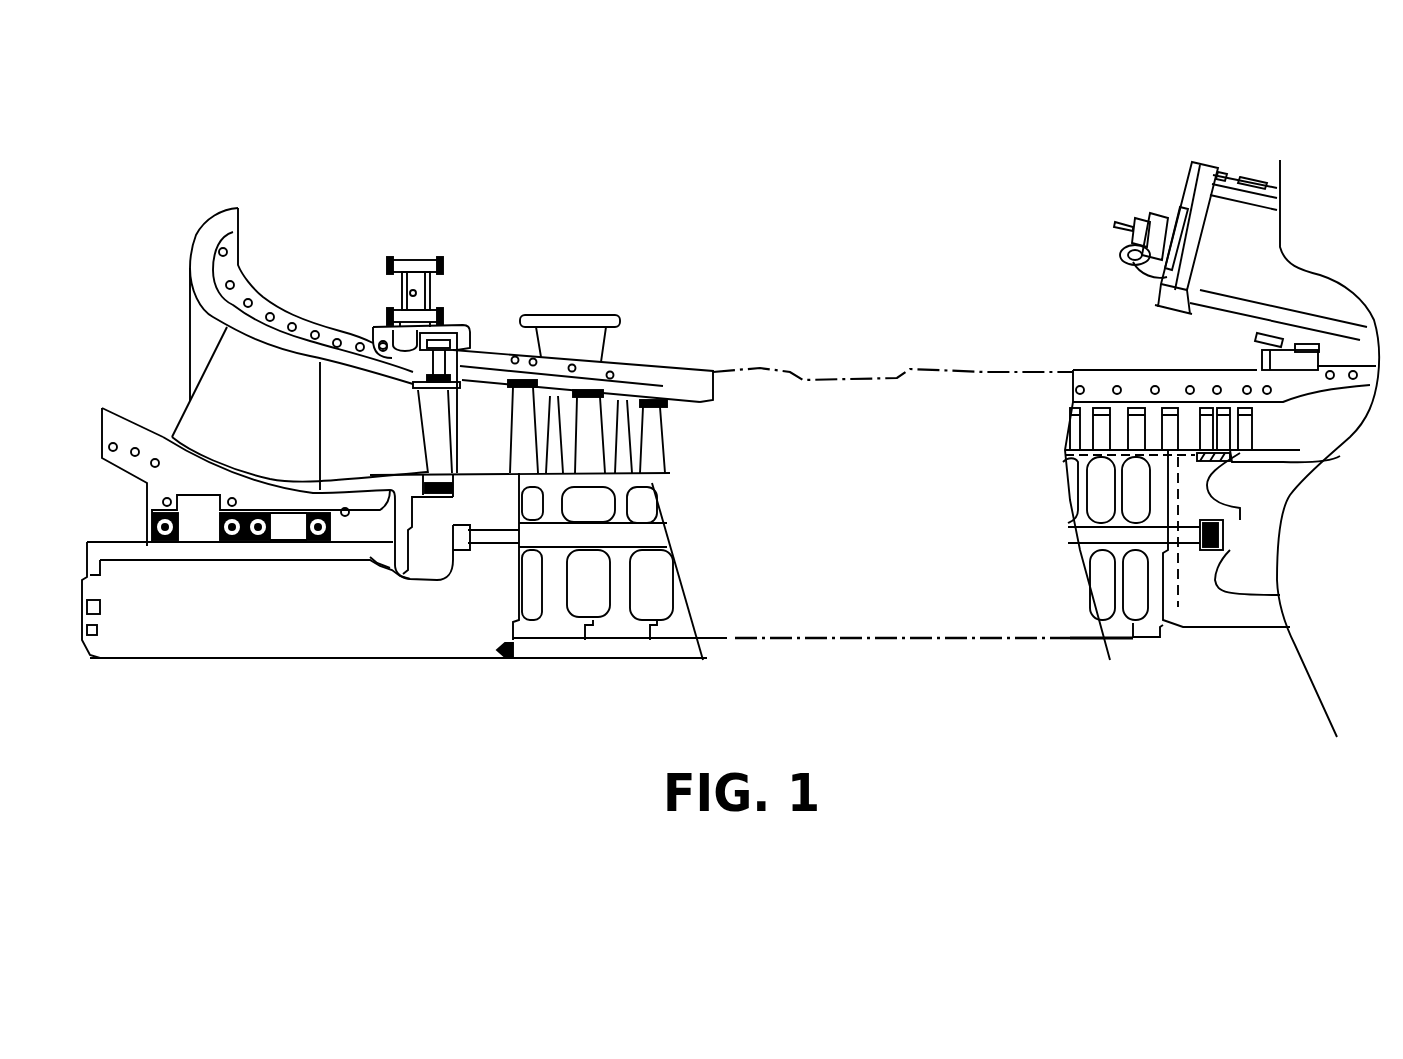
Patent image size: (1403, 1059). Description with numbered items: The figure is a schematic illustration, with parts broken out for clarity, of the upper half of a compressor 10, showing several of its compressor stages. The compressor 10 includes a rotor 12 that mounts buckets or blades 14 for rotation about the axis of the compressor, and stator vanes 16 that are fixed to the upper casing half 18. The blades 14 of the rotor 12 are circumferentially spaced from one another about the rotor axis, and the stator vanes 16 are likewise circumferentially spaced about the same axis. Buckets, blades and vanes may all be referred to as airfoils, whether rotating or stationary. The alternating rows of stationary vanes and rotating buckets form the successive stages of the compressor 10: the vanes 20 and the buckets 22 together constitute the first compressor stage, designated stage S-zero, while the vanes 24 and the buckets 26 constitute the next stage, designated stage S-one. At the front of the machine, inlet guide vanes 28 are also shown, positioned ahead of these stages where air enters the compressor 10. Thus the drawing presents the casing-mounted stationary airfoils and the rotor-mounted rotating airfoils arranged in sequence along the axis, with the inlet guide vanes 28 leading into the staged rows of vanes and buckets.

The compressor 10 is at (506, 220).
The rotor 12 is at (550, 590).
The blades 14 is at (627, 420).
The stator vanes 16 is at (588, 410).
The upper casing half 18 is at (490, 350).
The vanes 20 is at (430, 427).
The buckets 22 is at (470, 417).
The vanes 24 is at (517, 453).
The buckets 26 is at (555, 420).
The inlet guide vanes 28 is at (203, 427).